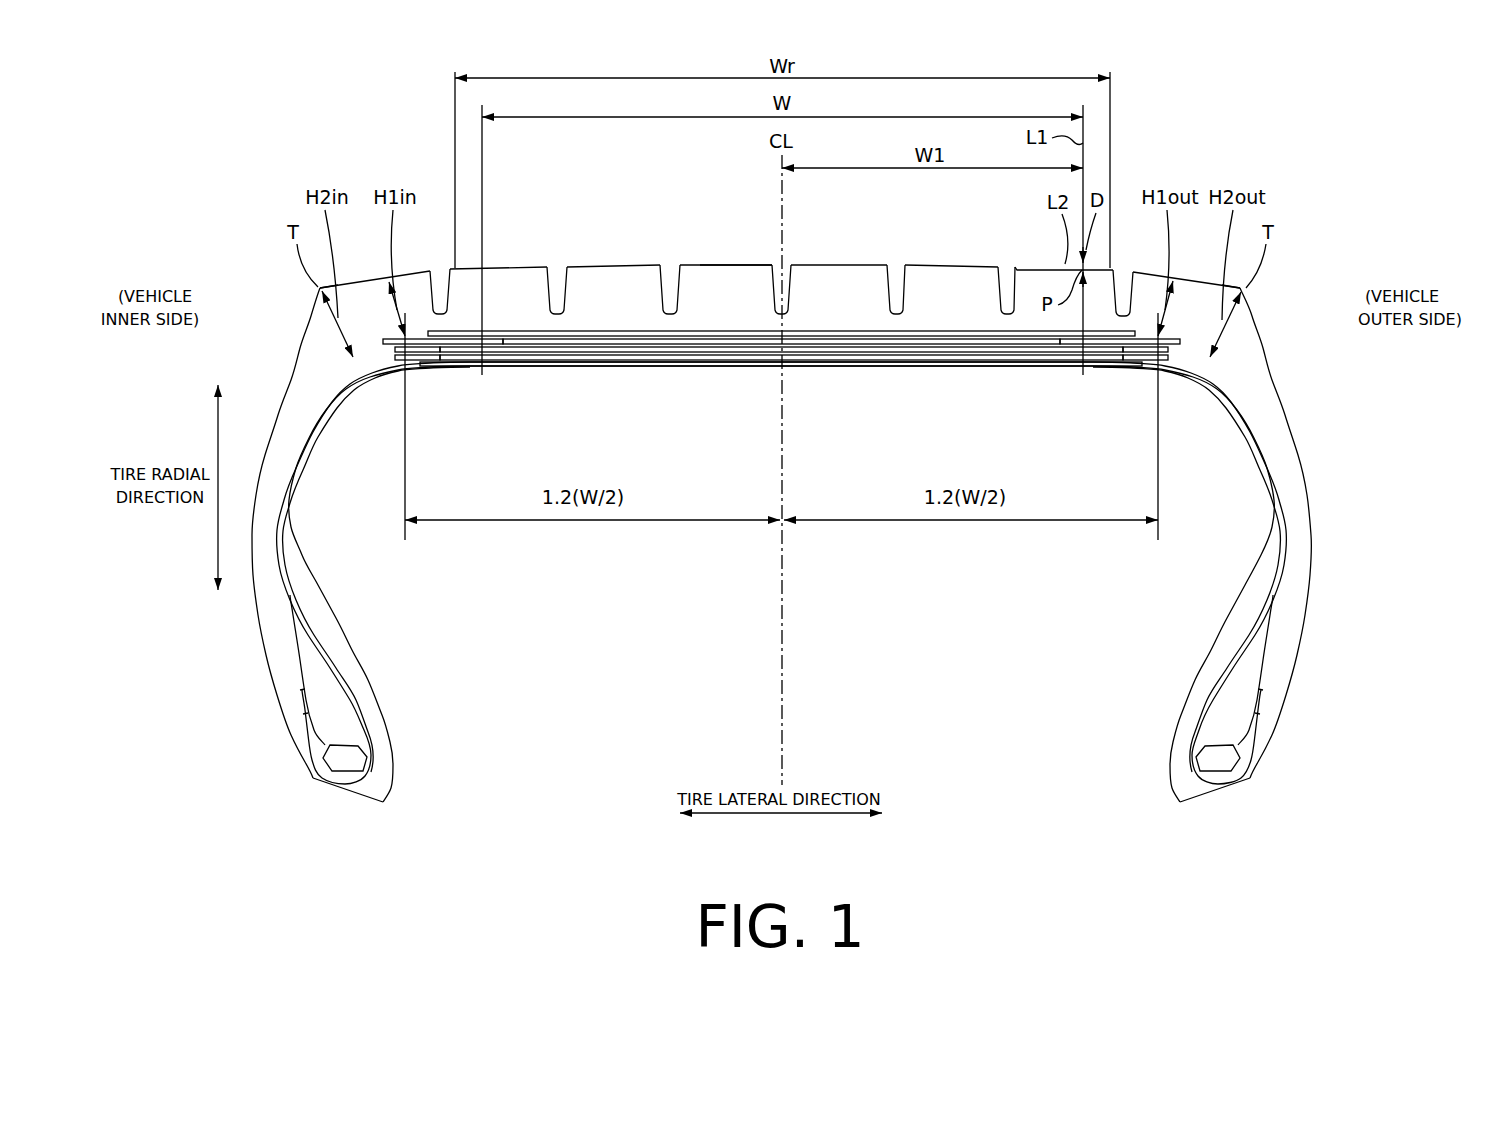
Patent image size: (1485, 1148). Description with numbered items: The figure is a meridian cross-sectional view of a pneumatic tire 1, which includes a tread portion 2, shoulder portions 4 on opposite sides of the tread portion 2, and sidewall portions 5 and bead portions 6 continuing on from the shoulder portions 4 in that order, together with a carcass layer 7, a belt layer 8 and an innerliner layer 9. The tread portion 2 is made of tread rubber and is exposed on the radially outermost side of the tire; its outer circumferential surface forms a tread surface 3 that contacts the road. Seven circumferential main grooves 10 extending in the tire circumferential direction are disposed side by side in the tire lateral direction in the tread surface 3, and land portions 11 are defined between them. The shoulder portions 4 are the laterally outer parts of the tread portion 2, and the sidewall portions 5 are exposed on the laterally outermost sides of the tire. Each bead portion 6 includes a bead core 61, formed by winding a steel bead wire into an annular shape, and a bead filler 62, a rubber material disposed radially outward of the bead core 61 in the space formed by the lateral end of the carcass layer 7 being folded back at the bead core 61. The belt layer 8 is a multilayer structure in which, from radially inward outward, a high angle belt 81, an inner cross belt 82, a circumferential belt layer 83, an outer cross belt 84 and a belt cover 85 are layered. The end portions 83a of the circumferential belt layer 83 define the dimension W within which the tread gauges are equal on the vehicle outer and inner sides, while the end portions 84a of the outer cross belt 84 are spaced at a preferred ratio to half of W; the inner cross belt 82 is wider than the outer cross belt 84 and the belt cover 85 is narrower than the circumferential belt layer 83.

The pneumatic tire 1 is at (1335, 163).
The tread portion 2 is at (722, 256).
The tread surface 3 is at (760, 262).
The shoulder portion 4 is at (318, 291).
The sidewall portion 5 is at (266, 468).
The bead portion 6 is at (390, 718).
The carcass layer 7 is at (289, 452).
The belt layer 8 is at (1045, 425).
The innerliner layer 9 is at (286, 512).
The circumferential main groove 10 is at (438, 292).
The land portion 11 is at (366, 285).
The bead core 61 is at (350, 756).
The bead filler 62 is at (318, 680).
The high angle belt 81 is at (1036, 366).
The inner cross belt 82 is at (980, 361).
The circumferential belt layer 83 is at (928, 353).
The end portion of circumferential belt layer 83a is at (460, 362).
The outer cross belt 84 is at (875, 345).
The end portion of outer cross belt 84a is at (383, 342).
The belt cover 85 is at (821, 338).